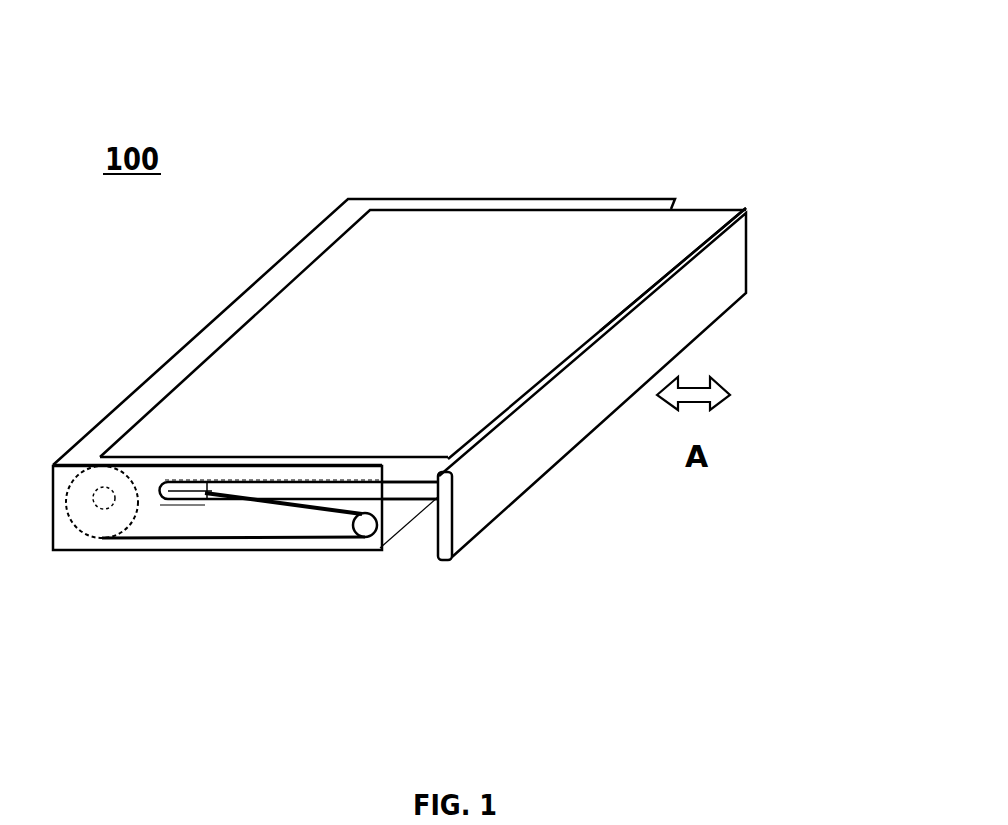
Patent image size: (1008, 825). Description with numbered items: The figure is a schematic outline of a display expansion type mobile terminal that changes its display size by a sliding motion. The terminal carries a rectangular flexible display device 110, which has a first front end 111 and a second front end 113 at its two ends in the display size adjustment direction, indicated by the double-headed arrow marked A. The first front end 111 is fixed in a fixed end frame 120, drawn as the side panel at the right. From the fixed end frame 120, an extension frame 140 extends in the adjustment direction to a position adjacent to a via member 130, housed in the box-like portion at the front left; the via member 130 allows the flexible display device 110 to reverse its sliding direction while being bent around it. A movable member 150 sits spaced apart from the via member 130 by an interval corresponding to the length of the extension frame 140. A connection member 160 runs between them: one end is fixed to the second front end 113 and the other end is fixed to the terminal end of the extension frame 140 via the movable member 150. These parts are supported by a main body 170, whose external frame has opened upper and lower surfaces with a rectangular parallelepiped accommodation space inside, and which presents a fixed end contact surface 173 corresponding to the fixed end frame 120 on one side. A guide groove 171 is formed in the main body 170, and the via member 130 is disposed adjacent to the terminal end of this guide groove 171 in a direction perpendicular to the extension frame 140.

The flexible display device 110 is at (423, 282).
The first front end 111 is at (620, 257).
The second front end 113 is at (172, 505).
The fixed end frame 120 is at (655, 371).
The via member 130 is at (214, 583).
The extension frame 140 is at (509, 564).
The movable member 150 is at (395, 581).
The connection member 160 is at (233, 587).
The main body 170 is at (364, 276).
The guide groove 171 is at (254, 386).
The fixed end contact surface 173 is at (443, 583).